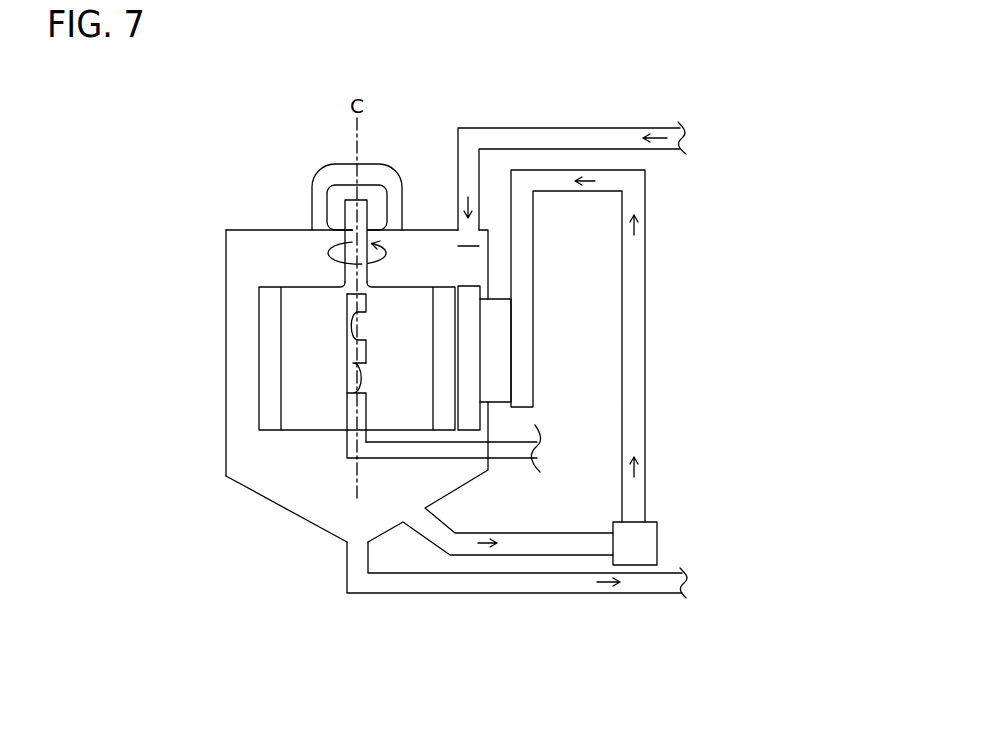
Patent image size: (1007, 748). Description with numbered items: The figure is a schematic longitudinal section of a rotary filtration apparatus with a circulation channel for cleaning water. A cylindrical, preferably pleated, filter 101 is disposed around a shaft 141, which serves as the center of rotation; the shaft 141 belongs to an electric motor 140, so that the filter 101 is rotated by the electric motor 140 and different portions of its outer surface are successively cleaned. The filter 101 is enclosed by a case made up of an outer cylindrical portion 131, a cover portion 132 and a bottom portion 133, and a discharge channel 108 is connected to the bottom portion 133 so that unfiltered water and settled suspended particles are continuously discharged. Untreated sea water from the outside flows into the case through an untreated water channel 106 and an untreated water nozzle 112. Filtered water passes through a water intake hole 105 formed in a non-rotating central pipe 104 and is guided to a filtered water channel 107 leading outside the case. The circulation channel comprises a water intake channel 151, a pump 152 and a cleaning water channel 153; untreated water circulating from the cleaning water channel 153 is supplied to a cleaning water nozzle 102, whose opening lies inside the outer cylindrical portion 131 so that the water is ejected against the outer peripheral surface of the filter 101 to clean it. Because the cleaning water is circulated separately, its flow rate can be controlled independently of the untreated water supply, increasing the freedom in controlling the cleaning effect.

The filter 101 is at (268, 420).
The cleaning water nozzle 102 is at (472, 385).
The central pipe 104 is at (353, 347).
The water intake hole 105 is at (352, 380).
The untreated water channel 106 is at (566, 128).
The filtered water channel 107 is at (513, 462).
The discharge channel 108 is at (347, 575).
The untreated water nozzle 112 is at (466, 250).
The outer cylindrical portion 131 is at (226, 467).
The cover portion 132 is at (247, 229).
The bottom portion 133 is at (287, 510).
The electric motor 140 is at (375, 207).
The shaft 141 is at (355, 216).
The water intake channel 151 is at (442, 518).
The pump 152 is at (652, 528).
The cleaning water channel 153 is at (522, 352).